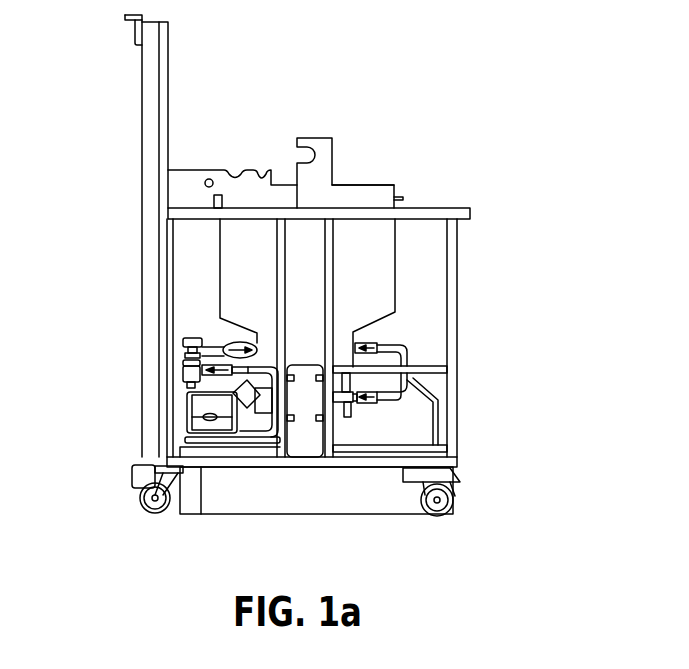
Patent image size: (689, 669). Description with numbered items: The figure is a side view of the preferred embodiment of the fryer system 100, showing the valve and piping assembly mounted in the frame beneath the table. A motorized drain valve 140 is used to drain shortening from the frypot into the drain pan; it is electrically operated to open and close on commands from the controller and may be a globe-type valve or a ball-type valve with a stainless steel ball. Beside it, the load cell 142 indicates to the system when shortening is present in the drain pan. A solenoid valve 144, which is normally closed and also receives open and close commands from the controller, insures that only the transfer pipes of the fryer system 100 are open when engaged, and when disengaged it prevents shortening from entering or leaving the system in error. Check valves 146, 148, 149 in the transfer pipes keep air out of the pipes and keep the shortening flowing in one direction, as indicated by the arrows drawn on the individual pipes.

The fryer system 100 is at (448, 163).
The motorized drain valve 140 is at (212, 421).
The load cell 142 is at (184, 447).
The solenoid valve 144 is at (183, 340).
The check valve 146 is at (232, 349).
The check valve 148 is at (213, 378).
The check valve 149 is at (370, 403).